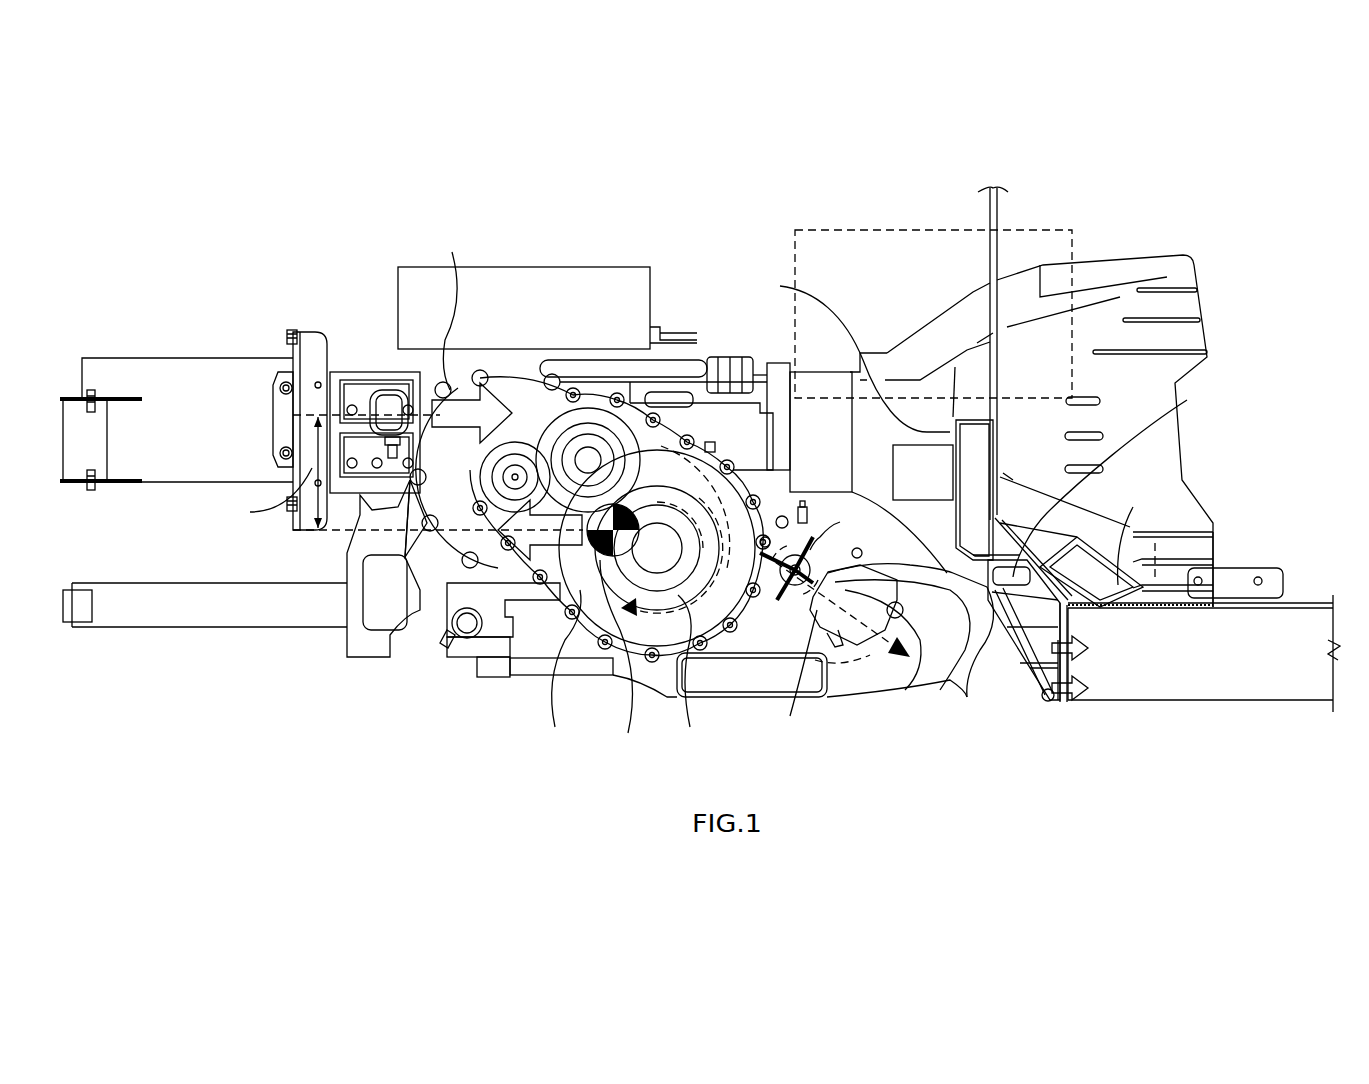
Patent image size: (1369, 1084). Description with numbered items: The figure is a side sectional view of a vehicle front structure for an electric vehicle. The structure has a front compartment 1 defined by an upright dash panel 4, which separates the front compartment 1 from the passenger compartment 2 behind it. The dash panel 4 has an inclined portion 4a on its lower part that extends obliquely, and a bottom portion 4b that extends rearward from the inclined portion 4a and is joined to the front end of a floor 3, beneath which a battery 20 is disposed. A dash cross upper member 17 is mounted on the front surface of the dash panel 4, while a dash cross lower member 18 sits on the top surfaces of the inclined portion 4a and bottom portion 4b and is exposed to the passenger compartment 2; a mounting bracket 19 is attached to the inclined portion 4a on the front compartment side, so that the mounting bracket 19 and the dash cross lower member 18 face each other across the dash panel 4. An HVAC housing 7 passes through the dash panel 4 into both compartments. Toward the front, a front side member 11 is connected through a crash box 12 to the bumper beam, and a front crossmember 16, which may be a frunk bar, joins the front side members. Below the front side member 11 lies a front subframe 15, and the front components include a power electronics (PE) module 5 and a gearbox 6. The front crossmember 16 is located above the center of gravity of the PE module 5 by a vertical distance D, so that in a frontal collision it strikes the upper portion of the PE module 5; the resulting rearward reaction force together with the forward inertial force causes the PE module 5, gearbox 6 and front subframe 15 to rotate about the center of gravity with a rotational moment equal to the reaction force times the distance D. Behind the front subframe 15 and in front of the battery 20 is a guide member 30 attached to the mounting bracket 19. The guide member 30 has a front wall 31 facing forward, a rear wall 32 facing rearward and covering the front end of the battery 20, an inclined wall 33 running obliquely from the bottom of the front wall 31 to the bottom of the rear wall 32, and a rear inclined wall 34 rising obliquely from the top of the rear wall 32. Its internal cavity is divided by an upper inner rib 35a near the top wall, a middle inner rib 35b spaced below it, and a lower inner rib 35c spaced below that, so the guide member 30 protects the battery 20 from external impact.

The front compartment 1 is at (718, 228).
The passenger compartment 2 is at (1216, 228).
The floor 3 is at (1305, 603).
The dash panel 4 is at (1000, 210).
The inclined portion 4a is at (1187, 400).
The bottom portion 4b is at (1173, 608).
The power electronics (PE) module 5 is at (580, 267).
The gearbox 6 is at (828, 523).
The heating, ventilation, and air conditioning (HVAC) housing 7 is at (893, 230).
The front side member 11 is at (350, 372).
The crash box 12 is at (205, 358).
The front subframe 15 is at (753, 700).
The front crossmember 16 is at (376, 400).
The dash cross upper member 17 is at (780, 286).
The dash cross lower member 18 is at (1125, 533).
The mounting bracket 19 is at (958, 520).
The battery 20 is at (1200, 700).
The guide member 30 is at (1035, 687).
The front wall 31 is at (1010, 587).
The rear wall 32 is at (1080, 668).
The inclined wall 33 is at (978, 620).
The rear inclined wall 34 is at (1133, 507).
The upper inner rib 35a is at (1020, 605).
The middle inner rib 35b is at (1040, 630).
The lower inner rib 35c is at (1045, 700).